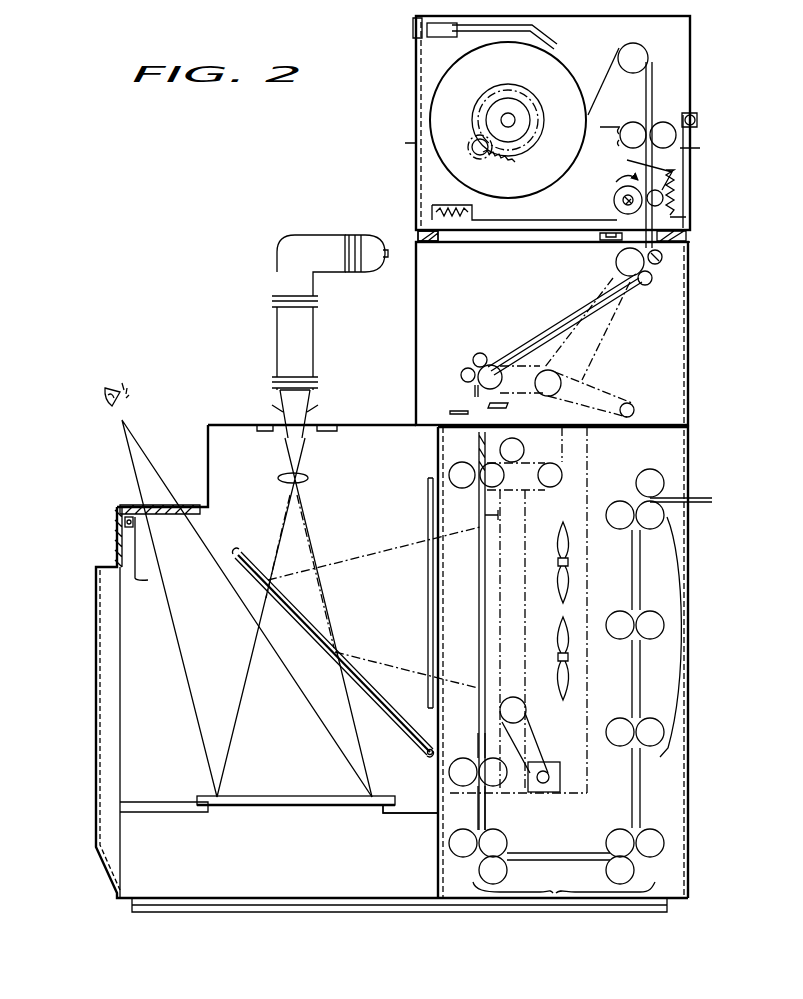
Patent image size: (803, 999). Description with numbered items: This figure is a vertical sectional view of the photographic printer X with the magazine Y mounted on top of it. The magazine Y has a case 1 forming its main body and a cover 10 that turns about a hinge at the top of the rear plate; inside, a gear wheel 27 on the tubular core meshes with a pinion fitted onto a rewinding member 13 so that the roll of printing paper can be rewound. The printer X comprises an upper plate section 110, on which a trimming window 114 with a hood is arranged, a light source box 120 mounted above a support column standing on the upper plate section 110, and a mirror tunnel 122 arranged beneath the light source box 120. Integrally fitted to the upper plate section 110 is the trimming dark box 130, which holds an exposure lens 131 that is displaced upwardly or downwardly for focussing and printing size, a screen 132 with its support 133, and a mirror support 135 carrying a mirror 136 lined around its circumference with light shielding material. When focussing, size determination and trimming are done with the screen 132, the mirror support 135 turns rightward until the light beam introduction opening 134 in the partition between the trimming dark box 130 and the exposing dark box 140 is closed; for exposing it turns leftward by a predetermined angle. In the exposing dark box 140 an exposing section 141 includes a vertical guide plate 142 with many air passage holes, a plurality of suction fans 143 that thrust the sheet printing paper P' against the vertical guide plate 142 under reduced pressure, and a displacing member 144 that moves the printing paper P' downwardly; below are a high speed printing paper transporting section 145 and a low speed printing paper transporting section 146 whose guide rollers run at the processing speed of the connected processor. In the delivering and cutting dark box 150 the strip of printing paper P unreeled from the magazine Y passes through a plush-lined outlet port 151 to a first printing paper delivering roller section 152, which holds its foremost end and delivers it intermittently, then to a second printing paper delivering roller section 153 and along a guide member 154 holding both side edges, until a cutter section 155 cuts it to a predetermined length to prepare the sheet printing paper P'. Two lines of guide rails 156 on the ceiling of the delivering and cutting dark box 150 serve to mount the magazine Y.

The case 1 is at (415, 173).
The cover 10 is at (415, 82).
The rewinding member 13 is at (487, 154).
The gear wheel 27 is at (518, 146).
The strip of photographic printing paper P is at (636, 145).
The magazine Y is at (703, 110).
The photographic printer X is at (692, 347).
The upper plate section 110 is at (218, 420).
The trimming window 114 is at (140, 515).
The light source box 120 is at (283, 247).
The mirror tunnel 122 is at (313, 340).
The trimming dark box 130 is at (142, 681).
The exposure lens 131 is at (309, 475).
The screen 132 is at (268, 790).
The platen support 133 is at (433, 787).
The light beam introduction opening 134 is at (427, 617).
The mirror support 135 is at (390, 712).
The mirror 136 is at (310, 620).
The exposing dark box 140 is at (652, 780).
The exposing section 141 is at (577, 760).
The vertical guide plate 142 is at (560, 640).
The suction fans 143 is at (558, 545).
The displacing member 144 is at (480, 508).
The high speed printing paper transporting section 145 is at (553, 893).
The low speed printing paper transporting section 146 is at (680, 632).
The delivering and cutting dark box 150 is at (662, 385).
The outlet port 151 is at (654, 280).
The first printing paper delivering roller section 152 is at (612, 261).
The second printing paper delivering roller section 153 is at (472, 356).
The guide member 154 is at (530, 340).
The cutter section 155 is at (458, 408).
The guide rails 156 is at (417, 233).
The printing paper in the form of a sheet P' is at (558, 838).